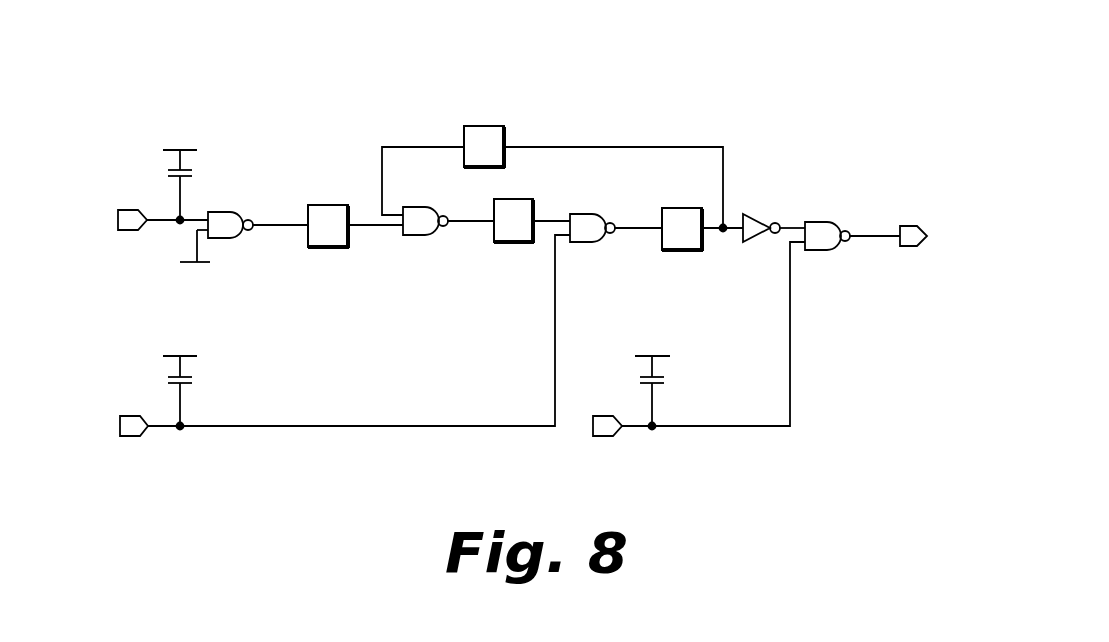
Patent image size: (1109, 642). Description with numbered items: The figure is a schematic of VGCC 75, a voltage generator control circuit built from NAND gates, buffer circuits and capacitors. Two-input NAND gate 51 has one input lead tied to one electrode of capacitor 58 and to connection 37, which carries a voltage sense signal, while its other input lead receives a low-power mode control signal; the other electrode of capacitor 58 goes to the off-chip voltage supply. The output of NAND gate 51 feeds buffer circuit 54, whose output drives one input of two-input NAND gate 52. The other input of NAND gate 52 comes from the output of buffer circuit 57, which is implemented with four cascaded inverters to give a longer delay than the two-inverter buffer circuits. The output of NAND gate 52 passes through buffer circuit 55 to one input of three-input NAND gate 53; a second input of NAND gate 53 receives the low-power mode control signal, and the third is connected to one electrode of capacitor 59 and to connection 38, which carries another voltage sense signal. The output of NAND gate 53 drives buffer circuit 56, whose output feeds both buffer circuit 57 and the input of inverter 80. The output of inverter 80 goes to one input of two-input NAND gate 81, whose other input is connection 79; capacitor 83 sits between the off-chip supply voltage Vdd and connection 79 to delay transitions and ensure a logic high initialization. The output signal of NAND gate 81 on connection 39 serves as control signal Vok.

The VGCC 75 is at (718, 55).
The connection 37 is at (157, 221).
The connection 38 is at (157, 427).
The connection 79 is at (630, 427).
The connection 39 is at (870, 237).
The NAND gate 51 is at (233, 212).
The NAND gate 52 is at (415, 235).
The NAND gate 53 is at (585, 214).
The NAND gate 81 is at (830, 222).
The buffer circuit 54 is at (333, 248).
The buffer circuit 55 is at (512, 243).
The buffer circuit 56 is at (675, 208).
The buffer circuit 57 is at (485, 126).
The capacitor 58 is at (195, 180).
The capacitor 59 is at (193, 385).
The capacitor 83 is at (665, 385).
The inverter 80 is at (757, 214).